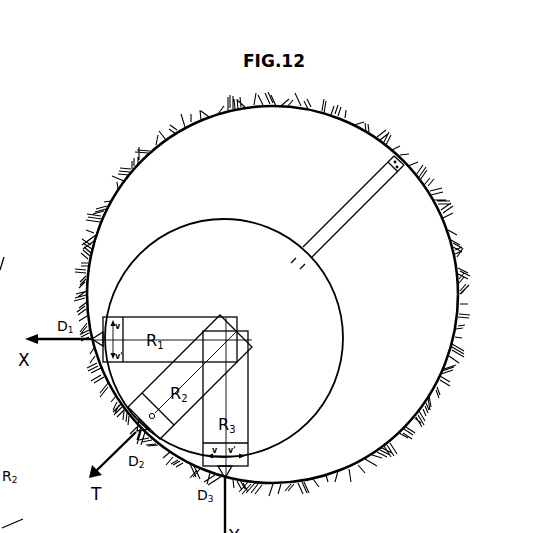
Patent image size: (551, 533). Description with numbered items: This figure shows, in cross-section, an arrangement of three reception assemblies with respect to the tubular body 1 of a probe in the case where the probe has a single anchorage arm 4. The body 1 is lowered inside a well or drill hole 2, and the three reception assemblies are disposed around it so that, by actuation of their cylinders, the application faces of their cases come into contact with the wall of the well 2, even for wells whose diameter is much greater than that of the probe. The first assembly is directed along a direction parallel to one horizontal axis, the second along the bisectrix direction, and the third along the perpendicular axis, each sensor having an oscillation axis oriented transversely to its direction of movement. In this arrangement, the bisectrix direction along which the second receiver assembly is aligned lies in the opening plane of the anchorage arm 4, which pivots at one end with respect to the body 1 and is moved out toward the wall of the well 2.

The tubular body 1 is at (207, 218).
The well or drill hole 2 is at (288, 112).
The anchorage arm 4 is at (357, 203).